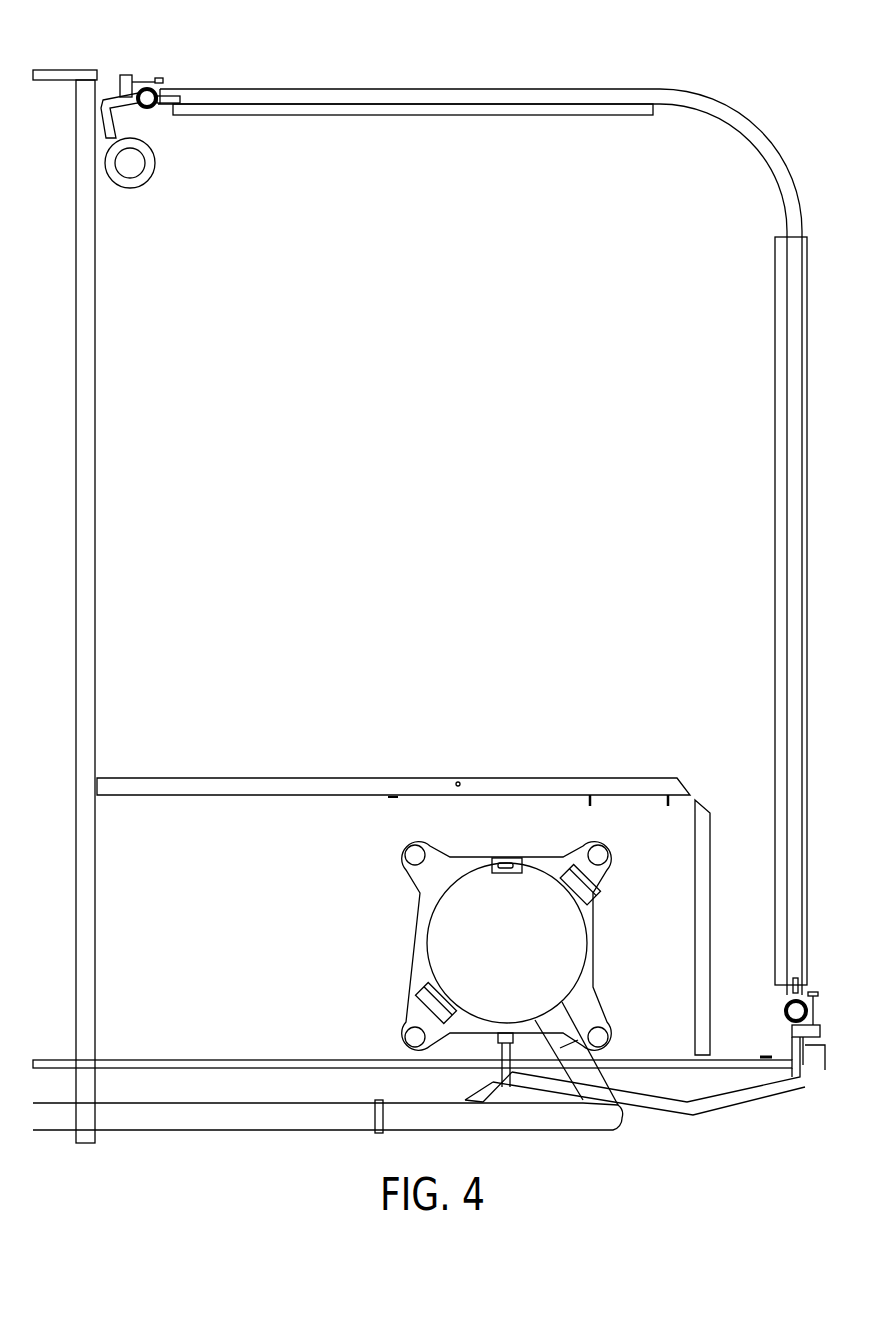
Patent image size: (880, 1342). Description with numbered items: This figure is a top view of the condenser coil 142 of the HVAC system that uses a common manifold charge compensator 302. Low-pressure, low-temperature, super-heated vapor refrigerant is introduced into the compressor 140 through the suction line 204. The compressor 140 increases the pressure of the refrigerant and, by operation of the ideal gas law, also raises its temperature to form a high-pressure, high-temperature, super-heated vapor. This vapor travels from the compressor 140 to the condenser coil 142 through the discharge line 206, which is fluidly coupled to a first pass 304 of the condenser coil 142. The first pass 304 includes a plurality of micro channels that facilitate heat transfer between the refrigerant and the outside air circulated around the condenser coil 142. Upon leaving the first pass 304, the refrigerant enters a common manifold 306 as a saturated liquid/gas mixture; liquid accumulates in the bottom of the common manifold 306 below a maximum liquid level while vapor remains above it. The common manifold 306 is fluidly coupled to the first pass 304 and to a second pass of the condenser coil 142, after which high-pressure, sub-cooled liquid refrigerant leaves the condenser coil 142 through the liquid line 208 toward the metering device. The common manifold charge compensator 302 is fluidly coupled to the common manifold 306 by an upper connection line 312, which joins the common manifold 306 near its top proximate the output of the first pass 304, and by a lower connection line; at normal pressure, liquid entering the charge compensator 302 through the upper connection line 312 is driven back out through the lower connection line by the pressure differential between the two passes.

The compressor 140 is at (577, 945).
The condenser coil 142 is at (745, 341).
The suction line 204 is at (198, 1117).
The discharge line 206 is at (745, 1092).
The liquid line 208 is at (238, 1060).
The common manifold charge compensator 302 is at (132, 172).
The first pass 304 is at (775, 642).
The common manifold 306 is at (152, 108).
The upper connection line 312 is at (117, 100).